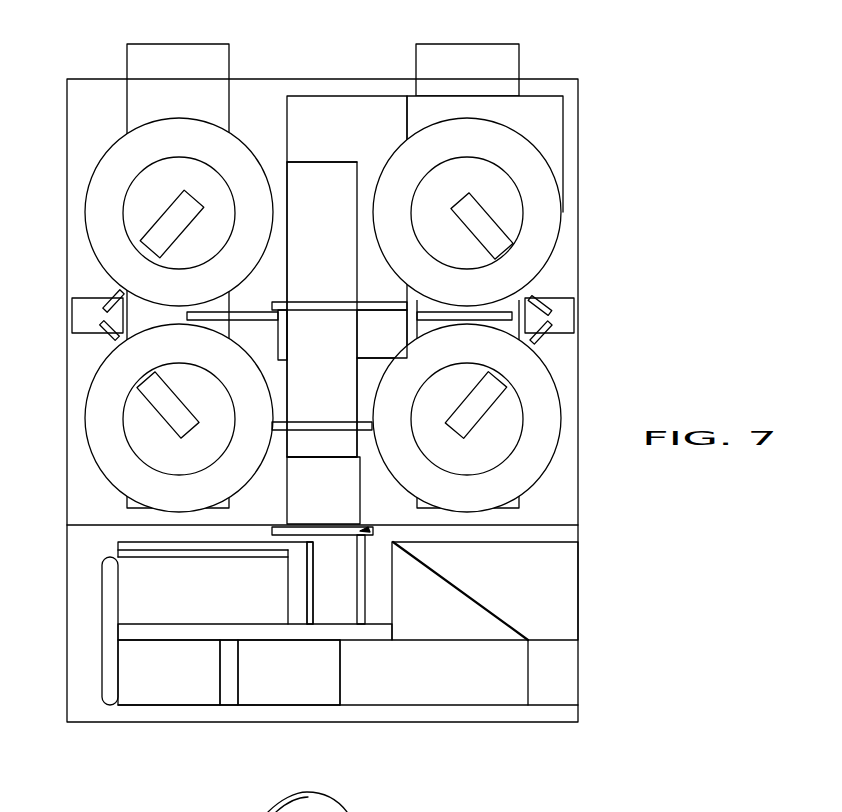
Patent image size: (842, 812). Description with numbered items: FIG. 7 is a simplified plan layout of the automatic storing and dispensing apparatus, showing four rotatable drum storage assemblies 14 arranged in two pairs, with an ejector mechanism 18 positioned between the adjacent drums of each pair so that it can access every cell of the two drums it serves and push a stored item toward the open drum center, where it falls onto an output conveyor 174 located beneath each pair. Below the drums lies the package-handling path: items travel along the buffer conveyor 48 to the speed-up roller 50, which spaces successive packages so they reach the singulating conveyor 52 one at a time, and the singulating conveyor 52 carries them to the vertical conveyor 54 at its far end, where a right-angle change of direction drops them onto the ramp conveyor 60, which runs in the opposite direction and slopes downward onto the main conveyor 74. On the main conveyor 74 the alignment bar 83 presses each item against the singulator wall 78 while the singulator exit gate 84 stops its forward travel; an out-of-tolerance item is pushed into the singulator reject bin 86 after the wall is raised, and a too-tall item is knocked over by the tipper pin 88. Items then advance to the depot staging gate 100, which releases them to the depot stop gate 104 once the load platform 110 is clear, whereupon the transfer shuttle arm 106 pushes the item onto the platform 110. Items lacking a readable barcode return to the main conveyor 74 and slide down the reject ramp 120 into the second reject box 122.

The drum storage assembly 14 is at (90, 198).
The ejector mechanism 18 is at (87, 315).
The buffer conveyor 48 is at (317, 693).
The speed-up roller 50 is at (228, 700).
The singulating conveyor 52 is at (192, 692).
The vertical conveyor 54 is at (108, 617).
The ramp conveyor 60 is at (348, 572).
The main conveyor 74 is at (343, 372).
The singulator wall 78 is at (367, 613).
The alignment bar section 83 is at (313, 610).
The singulator exit gate 84 is at (328, 524).
The singulator reject bin 86 is at (386, 582).
The singulator tipper pin 88 is at (361, 531).
The depot staging gate 100 is at (313, 422).
The depot stop gate 104 is at (320, 300).
The transfer shuttle arm 106 is at (288, 345).
The load platform 110 is at (378, 318).
The reject ramp 120 is at (344, 107).
The second reject box 122 is at (553, 130).
The output conveyor 174 is at (192, 60).